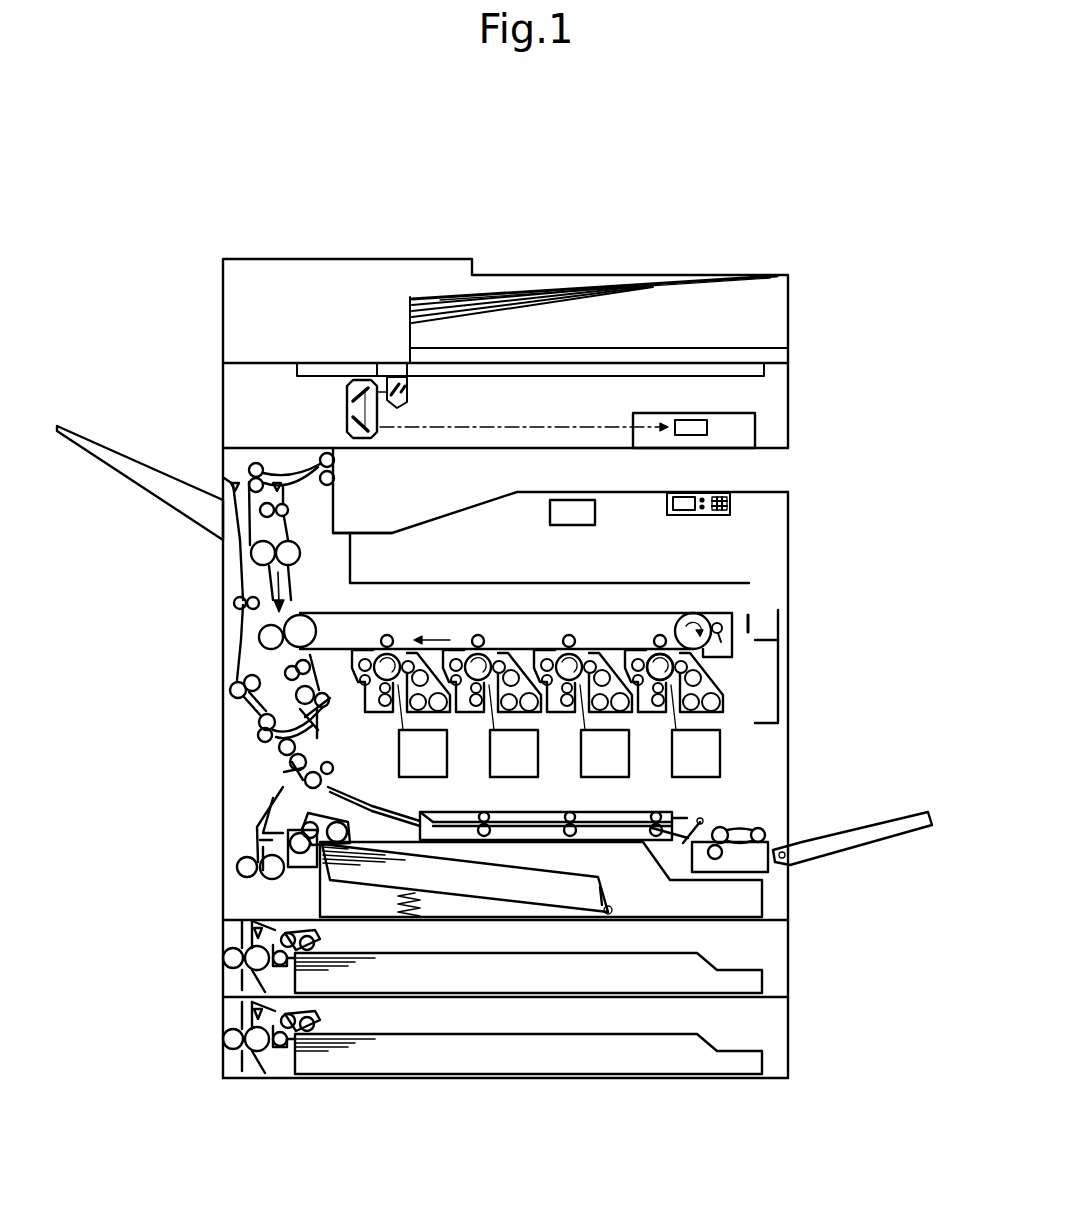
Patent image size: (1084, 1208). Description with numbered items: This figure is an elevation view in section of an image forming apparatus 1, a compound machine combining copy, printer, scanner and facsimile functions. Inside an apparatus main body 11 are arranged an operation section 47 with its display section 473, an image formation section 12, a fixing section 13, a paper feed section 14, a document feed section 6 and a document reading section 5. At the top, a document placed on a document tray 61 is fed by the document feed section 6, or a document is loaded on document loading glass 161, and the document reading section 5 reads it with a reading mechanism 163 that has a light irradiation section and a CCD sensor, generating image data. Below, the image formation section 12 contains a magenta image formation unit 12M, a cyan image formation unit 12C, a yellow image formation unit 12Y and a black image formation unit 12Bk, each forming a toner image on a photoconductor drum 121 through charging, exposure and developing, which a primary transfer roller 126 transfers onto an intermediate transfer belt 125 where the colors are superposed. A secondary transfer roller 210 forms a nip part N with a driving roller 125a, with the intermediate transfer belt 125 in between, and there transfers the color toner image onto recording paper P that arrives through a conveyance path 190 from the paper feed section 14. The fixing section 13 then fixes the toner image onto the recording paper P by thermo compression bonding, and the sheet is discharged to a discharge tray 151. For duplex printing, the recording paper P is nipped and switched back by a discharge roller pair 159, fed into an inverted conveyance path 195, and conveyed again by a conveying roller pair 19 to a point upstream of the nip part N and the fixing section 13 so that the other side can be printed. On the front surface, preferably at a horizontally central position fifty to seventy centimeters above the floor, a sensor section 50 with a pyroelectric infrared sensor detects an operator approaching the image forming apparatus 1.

The image forming apparatus 1 is at (868, 341).
The document reading section 5 is at (202, 398).
The document feed section 6 is at (630, 258).
The document tray 61 is at (692, 283).
The document loading glass 161 is at (651, 370).
The reading mechanism 163 is at (341, 418).
The discharge roller pair 159 is at (337, 455).
The discharge tray 151 is at (377, 532).
The sensor section 50 is at (560, 500).
The display section 473 is at (683, 502).
The apparatus main body 11 is at (795, 518).
The operation section 47 is at (730, 507).
The image formation section 12 is at (745, 653).
The black image formation unit 12Bk is at (397, 638).
The yellow image formation unit 12Y is at (477, 634).
The cyan image formation unit 12C is at (582, 636).
The magenta image formation unit 12M is at (663, 626).
The photoconductor drum 121 is at (661, 681).
The intermediate transfer belt 125 is at (672, 613).
The primary transfer roller 126 is at (652, 640).
The driving roller 125a is at (297, 625).
The fixing section 13 is at (246, 555).
The nip part N is at (263, 597).
The inverted conveyance path 195 is at (267, 640).
The conveyance path 190 is at (252, 628).
The secondary transfer roller 210 is at (240, 642).
The conveying roller pair 19 is at (320, 730).
The recording paper P is at (585, 865).
The paper feed section 14 is at (765, 950).